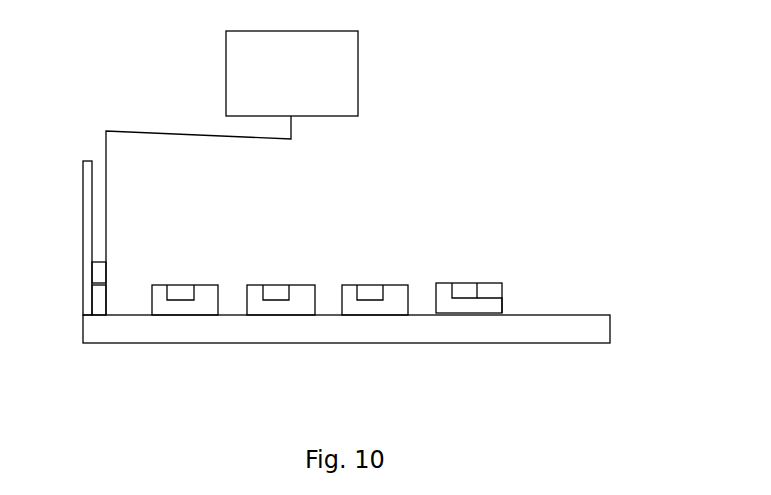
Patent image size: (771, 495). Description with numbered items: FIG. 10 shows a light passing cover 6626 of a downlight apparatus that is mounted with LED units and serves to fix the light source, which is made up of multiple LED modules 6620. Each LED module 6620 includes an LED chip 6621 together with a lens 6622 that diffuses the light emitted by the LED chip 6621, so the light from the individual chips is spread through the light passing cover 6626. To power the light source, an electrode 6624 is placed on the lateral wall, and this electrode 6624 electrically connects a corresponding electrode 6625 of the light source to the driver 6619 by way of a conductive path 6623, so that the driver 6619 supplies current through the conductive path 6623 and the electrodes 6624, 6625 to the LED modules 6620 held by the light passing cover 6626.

The driver 6619 is at (347, 73).
The LED module 6620 is at (439, 297).
The LED chip 6621 is at (457, 292).
The lens 6622 is at (490, 297).
The conductive path 6623 is at (108, 217).
The electrode 6624 is at (100, 274).
The corresponding electrode 6625 is at (103, 305).
The light passing cover 6626 is at (313, 335).